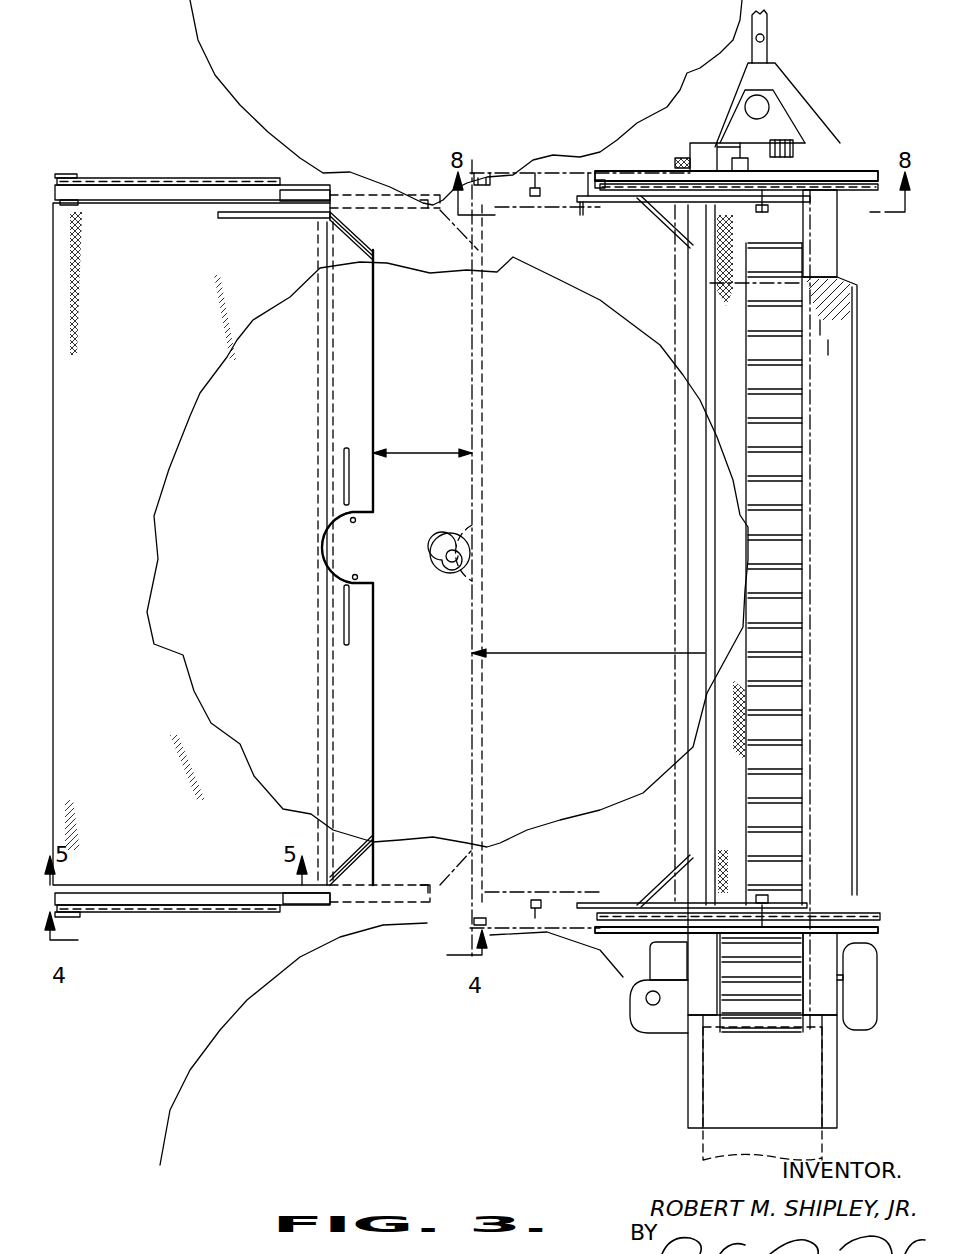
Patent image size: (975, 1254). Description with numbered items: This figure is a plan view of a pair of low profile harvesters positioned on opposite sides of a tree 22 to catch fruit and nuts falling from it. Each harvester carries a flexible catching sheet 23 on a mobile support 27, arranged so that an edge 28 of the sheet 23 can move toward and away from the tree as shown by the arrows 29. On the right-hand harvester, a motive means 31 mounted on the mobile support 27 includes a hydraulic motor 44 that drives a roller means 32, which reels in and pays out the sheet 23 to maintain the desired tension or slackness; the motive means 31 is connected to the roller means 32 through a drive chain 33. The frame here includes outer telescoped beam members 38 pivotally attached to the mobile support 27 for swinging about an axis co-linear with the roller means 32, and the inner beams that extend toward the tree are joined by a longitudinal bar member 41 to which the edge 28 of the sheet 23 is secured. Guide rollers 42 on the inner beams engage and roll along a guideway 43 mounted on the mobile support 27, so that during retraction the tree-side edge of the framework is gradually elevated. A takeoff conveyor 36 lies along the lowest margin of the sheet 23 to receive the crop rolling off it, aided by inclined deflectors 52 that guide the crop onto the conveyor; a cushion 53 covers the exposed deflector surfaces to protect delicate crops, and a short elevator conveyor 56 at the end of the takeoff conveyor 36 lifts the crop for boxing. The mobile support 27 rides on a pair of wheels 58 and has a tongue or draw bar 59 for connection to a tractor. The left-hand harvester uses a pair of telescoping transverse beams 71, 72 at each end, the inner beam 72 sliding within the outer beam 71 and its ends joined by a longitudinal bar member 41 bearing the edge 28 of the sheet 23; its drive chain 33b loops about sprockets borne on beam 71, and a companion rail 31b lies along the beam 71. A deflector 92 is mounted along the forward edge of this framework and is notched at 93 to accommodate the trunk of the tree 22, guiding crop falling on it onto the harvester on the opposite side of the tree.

The tree 22 is at (443, 571).
The flexible catching sheet 23 is at (200, 330).
The mobile support 27 is at (680, 443).
The edge of the sheet 28 is at (328, 343).
The arrows 29 is at (434, 452).
The motive means 31 is at (635, 925).
The lower rail strip 31b is at (175, 922).
The roller means 32 is at (80, 204).
The drive chain 33 is at (857, 205).
The drive chain 33b is at (207, 180).
The takeoff conveyor 36 is at (810, 603).
The telescoped beam member 38 is at (848, 172).
The longitudinal bar member 41 is at (340, 888).
The guide rollers 42 is at (765, 202).
The guideway 43 is at (592, 202).
The hydraulic motor 44 is at (718, 148).
The inclined deflectors 52 is at (840, 262).
The cushion 53 is at (842, 396).
The elevator conveyor 56 is at (760, 1034).
The wheels 58 is at (650, 968).
The tongue or draw bar 59 is at (790, 102).
The transverse beam 71 is at (157, 194).
The transverse beam 72 is at (300, 193).
The deflector 92 is at (365, 372).
The notch 93 is at (345, 535).